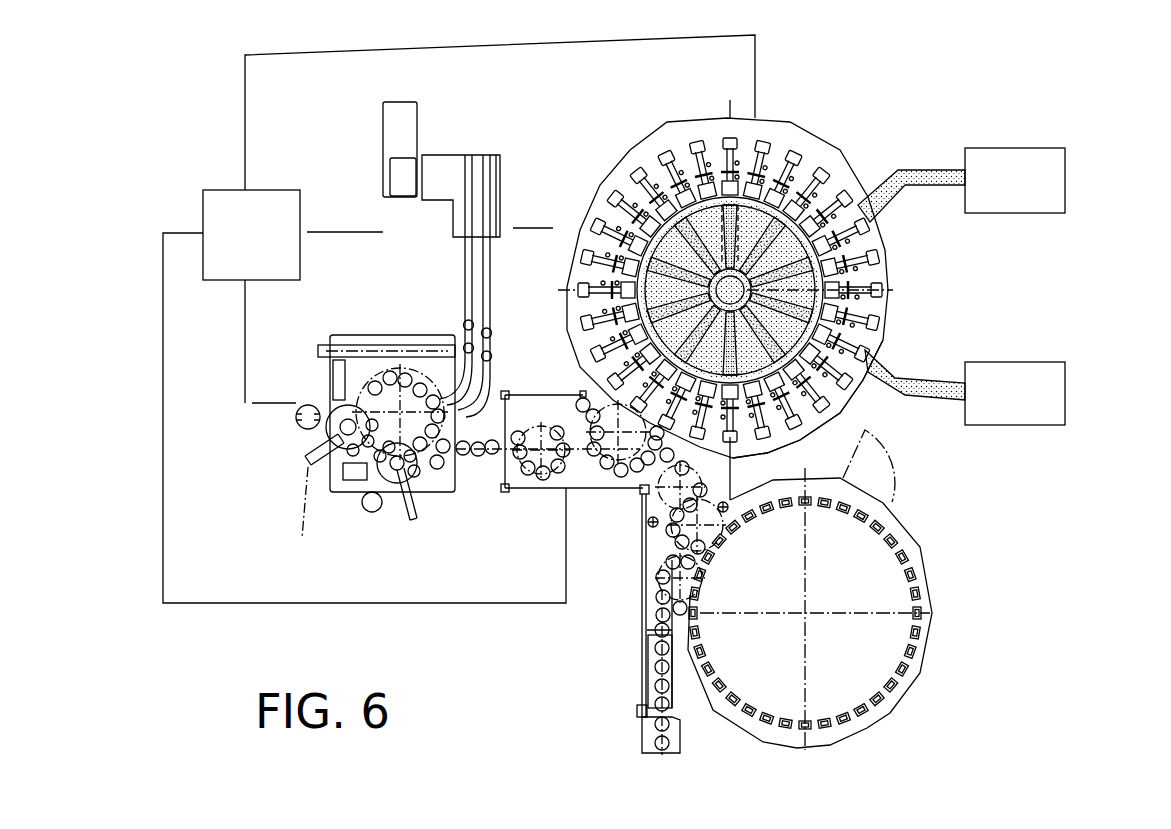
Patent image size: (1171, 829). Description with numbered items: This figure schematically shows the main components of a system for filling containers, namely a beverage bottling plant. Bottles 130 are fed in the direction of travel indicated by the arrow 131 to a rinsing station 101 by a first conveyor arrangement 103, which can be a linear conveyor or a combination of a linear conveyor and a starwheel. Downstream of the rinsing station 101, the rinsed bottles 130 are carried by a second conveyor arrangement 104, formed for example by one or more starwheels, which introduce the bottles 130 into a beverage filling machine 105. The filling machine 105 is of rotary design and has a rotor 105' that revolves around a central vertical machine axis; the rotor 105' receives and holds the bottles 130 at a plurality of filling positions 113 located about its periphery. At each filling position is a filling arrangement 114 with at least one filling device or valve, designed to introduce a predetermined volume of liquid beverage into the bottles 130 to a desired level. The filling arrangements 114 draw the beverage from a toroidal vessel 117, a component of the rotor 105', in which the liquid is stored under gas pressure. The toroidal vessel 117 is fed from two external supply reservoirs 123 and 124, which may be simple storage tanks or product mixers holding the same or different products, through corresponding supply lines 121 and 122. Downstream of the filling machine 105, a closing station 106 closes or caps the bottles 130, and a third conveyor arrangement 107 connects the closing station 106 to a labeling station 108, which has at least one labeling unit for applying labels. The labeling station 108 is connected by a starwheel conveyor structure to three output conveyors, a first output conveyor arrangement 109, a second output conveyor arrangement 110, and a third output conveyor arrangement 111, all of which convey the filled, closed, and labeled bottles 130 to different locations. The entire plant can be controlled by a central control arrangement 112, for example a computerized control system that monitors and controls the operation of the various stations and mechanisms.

The rinsing station 101 is at (950, 514).
The first conveyor arrangement 103 is at (673, 683).
The second conveyor arrangement 104 is at (653, 545).
The beverage filling machine 105 is at (780, 300).
The rotor 105' is at (730, 264).
The closing station 106 is at (557, 384).
The third conveyor arrangement 107 is at (514, 504).
The labeling station 108 is at (356, 528).
The first output conveyor arrangement 109 is at (490, 332).
The second output conveyor arrangement 110 is at (465, 266).
The third output conveyor arrangement 111 is at (366, 343).
The central control arrangement 112 is at (237, 249).
The filling positions 113 is at (886, 227).
The filling arrangement 114 is at (885, 311).
The toroidal vessel 117 is at (832, 423).
The supply line 121 is at (918, 170).
The supply line 122 is at (923, 379).
The external supply reservoir 123 is at (1057, 188).
The external supply reservoir 124 is at (1065, 400).
The bottles 130 is at (662, 700).
The arrow 131 is at (628, 682).